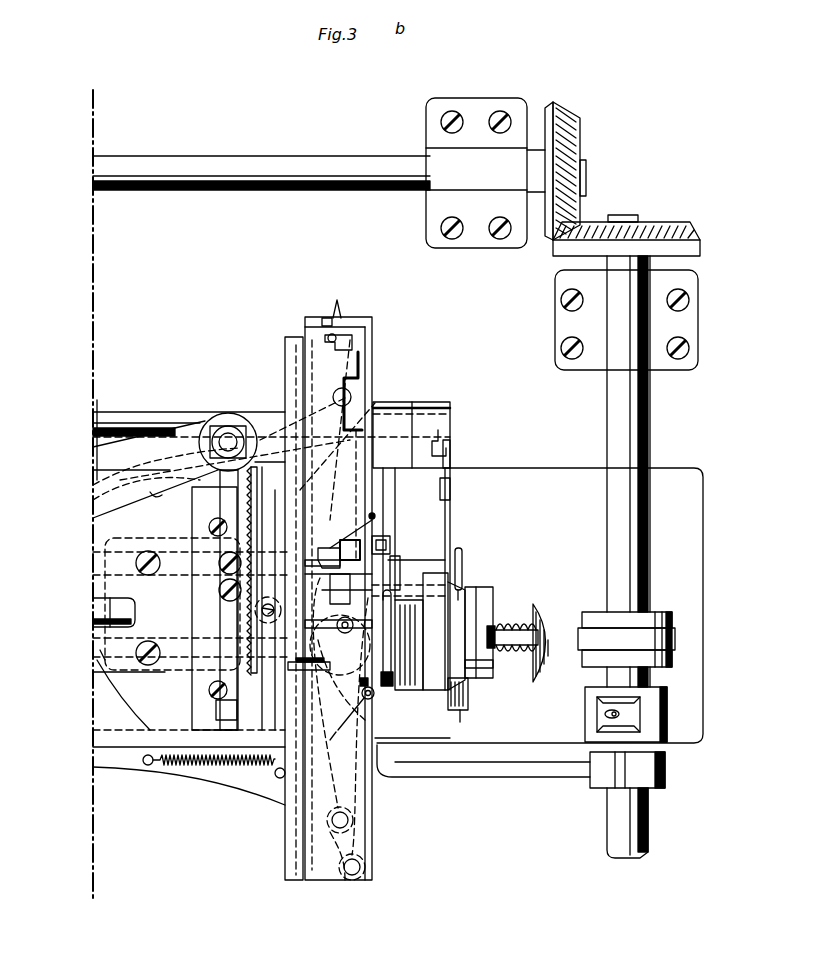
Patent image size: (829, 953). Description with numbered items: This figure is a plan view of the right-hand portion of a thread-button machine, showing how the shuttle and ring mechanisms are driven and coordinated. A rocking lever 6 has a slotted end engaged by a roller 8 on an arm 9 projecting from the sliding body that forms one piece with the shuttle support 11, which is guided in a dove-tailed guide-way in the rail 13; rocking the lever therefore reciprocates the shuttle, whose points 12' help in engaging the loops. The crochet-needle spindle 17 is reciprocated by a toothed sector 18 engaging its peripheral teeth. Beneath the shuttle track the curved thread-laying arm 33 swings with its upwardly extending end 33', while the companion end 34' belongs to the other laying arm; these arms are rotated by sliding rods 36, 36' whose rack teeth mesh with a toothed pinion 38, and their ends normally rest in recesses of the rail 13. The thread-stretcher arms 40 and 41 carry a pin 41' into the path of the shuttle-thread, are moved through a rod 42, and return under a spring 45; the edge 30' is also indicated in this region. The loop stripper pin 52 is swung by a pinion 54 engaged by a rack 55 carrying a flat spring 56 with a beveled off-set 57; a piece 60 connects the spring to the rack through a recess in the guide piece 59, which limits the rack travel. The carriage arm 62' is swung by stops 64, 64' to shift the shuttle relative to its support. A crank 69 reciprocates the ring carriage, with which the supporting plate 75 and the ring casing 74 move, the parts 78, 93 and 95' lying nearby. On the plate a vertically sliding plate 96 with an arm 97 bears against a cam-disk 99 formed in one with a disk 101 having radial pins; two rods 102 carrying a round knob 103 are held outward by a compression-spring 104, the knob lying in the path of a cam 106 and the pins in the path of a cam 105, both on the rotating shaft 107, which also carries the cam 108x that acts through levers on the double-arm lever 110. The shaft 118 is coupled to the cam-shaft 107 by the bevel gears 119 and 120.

The rocking lever 6 is at (140, 483).
The roller 8 is at (220, 426).
The arm 9 is at (262, 426).
The shuttle support 11 is at (372, 360).
The pointer 12' is at (356, 305).
The rail 13 is at (285, 369).
The needle spindle 17 is at (118, 612).
The toothed sector 18 is at (258, 618).
The cam edge 30' is at (166, 496).
The swinging arm 33 is at (351, 704).
The upwardly extending end 33' is at (324, 736).
The upwardly extending end 34' is at (397, 535).
The sliding rod 36 is at (123, 690).
The sliding rod 36' is at (191, 605).
The toothed pinion 38 is at (340, 645).
The swinging arm 40 is at (353, 796).
The swinging arm 41 is at (247, 444).
The pin 41' is at (396, 511).
The rod 42 is at (136, 768).
The spring 45 is at (222, 775).
The pin 52 is at (341, 680).
The pinion 54 is at (268, 590).
The rack 55 is at (252, 494).
The flat spring 56 is at (220, 666).
The beveled off-set 57 is at (228, 700).
The guide piece 59 is at (200, 508).
The piece 60 is at (222, 576).
The arm 62' is at (373, 519).
The stop 64 is at (326, 669).
The stop 64' is at (322, 539).
The crank 69 is at (450, 452).
The flat casing 74 is at (405, 700).
The supporting plate 75 is at (440, 740).
The wall 78 is at (450, 509).
The slot rod 93 is at (390, 720).
The lever 95' is at (436, 557).
The vertically sliding plate 96 is at (470, 592).
The arm 97 is at (480, 630).
The cam-disk 99 is at (477, 700).
The disk 101 is at (462, 565).
The rods 102 is at (512, 627).
The round knob 103 is at (540, 612).
The compression-spring 104 is at (518, 652).
The cam 105 is at (606, 714).
The cam 106 is at (655, 618).
The rotating shaft 107 is at (650, 418).
The cam 108x is at (600, 775).
The double-arm lever 110 is at (408, 772).
The shaft 118 is at (245, 168).
The bevel gear 119 is at (578, 150).
The bevel gear 120 is at (650, 225).